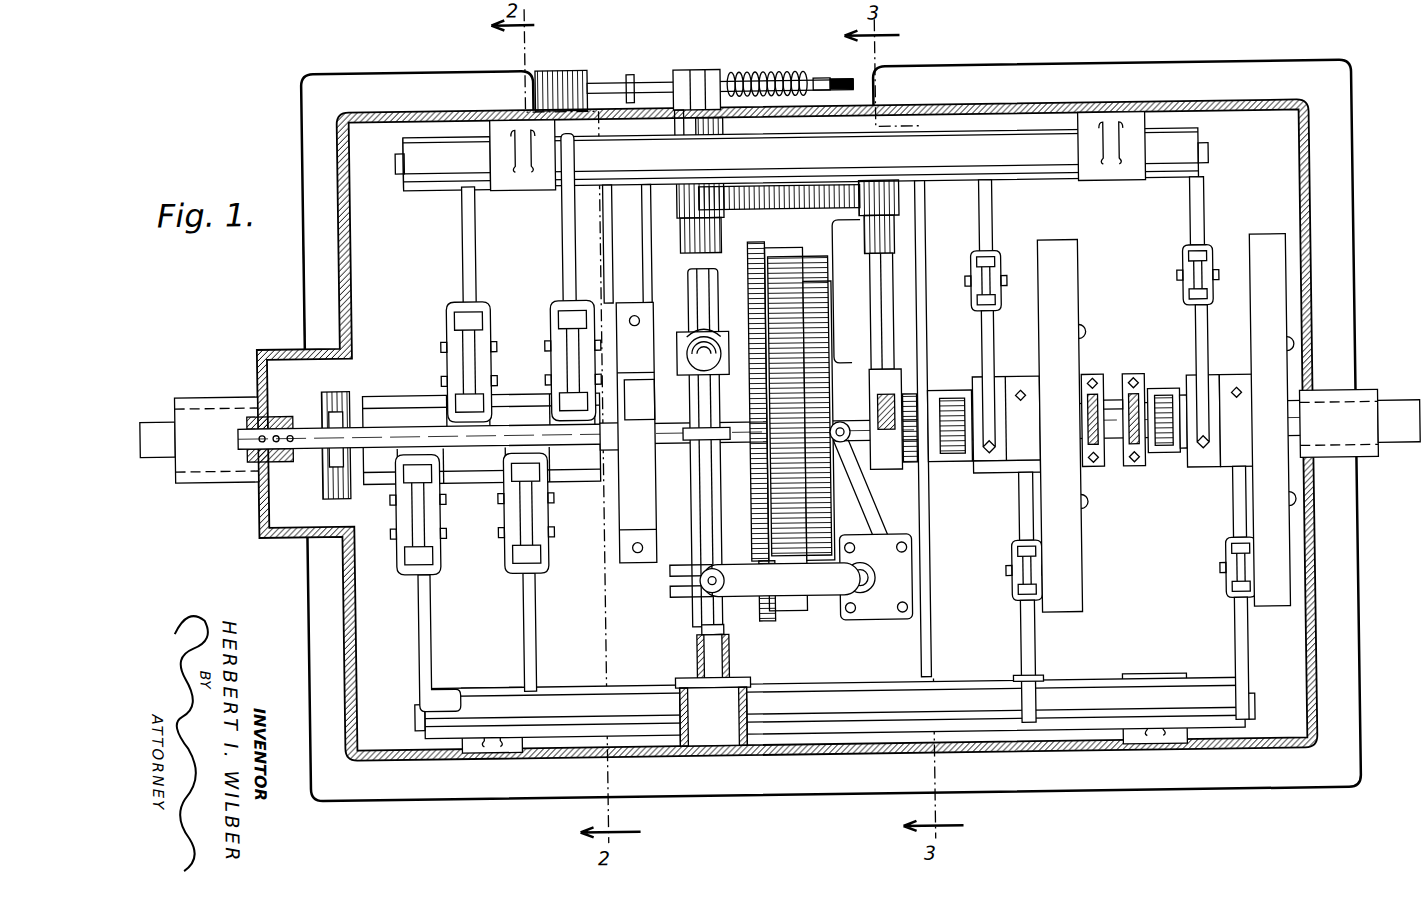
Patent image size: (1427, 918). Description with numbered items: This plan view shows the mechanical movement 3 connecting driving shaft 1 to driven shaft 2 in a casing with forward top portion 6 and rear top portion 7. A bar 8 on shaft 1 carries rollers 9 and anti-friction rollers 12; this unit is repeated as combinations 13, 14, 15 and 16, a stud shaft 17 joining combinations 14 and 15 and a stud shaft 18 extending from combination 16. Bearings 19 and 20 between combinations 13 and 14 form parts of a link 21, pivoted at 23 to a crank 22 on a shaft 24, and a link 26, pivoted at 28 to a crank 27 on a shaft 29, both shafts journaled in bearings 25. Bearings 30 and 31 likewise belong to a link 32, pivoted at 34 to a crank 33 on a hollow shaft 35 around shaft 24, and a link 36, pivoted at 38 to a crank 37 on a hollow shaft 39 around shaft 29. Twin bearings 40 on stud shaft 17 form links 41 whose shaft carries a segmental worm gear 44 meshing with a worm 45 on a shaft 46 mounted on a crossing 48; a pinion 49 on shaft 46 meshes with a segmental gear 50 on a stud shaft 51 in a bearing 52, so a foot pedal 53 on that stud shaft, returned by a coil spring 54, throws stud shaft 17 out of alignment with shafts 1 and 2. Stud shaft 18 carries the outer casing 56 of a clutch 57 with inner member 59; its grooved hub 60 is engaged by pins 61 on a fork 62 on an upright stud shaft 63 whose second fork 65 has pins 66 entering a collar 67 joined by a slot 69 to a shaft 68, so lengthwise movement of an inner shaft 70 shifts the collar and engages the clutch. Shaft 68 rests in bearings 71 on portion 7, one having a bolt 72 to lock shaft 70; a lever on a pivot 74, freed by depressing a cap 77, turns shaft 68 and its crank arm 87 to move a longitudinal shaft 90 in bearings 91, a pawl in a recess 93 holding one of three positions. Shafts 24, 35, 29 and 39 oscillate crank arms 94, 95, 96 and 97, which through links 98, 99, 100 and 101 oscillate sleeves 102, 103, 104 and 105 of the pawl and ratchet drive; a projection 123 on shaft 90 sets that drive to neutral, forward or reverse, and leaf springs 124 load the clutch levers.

The driving shaft 1 is at (1386, 410).
The driven shaft 2 is at (156, 410).
The mechanical movement 3 is at (830, 412).
The forward top portion 6 is at (1055, 92).
The rear top portion 7 is at (458, 107).
The bar 8 is at (946, 398).
The rollers 9 is at (1163, 394).
The anti-friction rollers 12 is at (1086, 334).
The first combination 13 is at (1262, 244).
The second combination 14 is at (1180, 462).
The third combination 15 is at (1050, 250).
The fourth combination 16 is at (958, 464).
The stud shaft 17 is at (1113, 403).
The stud shaft 18 is at (934, 382).
The bearing 19 is at (1223, 380).
The bearing 20 is at (1205, 474).
The link 21 is at (1232, 528).
The crank 22 is at (1231, 652).
The pivot 23 is at (1217, 578).
The shaft 24 is at (410, 706).
The bearings 25 is at (530, 187).
The link 26 is at (1196, 344).
The crank 27 is at (1192, 216).
The pivot 28 is at (1178, 274).
The shaft 29 is at (400, 153).
The bearing 30 is at (1006, 380).
The bearing 31 is at (994, 476).
The link 32 is at (1033, 524).
The crank 33 is at (1017, 640).
The pivot 34 is at (1004, 578).
The hollow shaft 35 is at (950, 684).
The link 36 is at (996, 352).
The crank 37 is at (981, 212).
The pivot 38 is at (968, 280).
The hollow shaft 39 is at (828, 150).
The twin bearings 40 is at (1100, 472).
The links 41 is at (1130, 420).
The segmental worm gear 44 is at (872, 348).
The worm 45 is at (916, 460).
The shaft 46 is at (876, 285).
The crossing 48 is at (929, 310).
The pinion 49 is at (862, 214).
The segmental gear 50 is at (820, 208).
The stud shaft 51 is at (703, 68).
The bearing 52 is at (679, 129).
The foot pedal 53 is at (835, 78).
The coil spring 54 is at (782, 72).
The clutch outer casing 56 is at (799, 429).
The clutch 57 is at (762, 620).
The clutch inner member 59 is at (756, 340).
The grooved hub 60 is at (870, 372).
The pins 61 is at (832, 437).
The fork 62 is at (862, 515).
The upright stud shaft 63 is at (862, 593).
The second fork 65 is at (830, 598).
The pins 66 is at (668, 590).
The collar 67 is at (655, 552).
The shaft 68 is at (689, 504).
The slot 69 is at (701, 626).
The shaft 70 is at (727, 658).
The bearings 71 is at (690, 677).
The bolt 72 is at (718, 718).
The pivot 74 is at (680, 350).
The cap 77 is at (690, 334).
The crank arm 87 is at (740, 432).
The longitudinal shaft 90 is at (376, 420).
The bearings 91 is at (606, 428).
The recess 93 is at (280, 428).
The crank arm 94 is at (415, 638).
The crank 95 is at (534, 630).
The crank arm 96 is at (464, 216).
The arm 97 is at (564, 254).
The link 98 is at (410, 556).
The link 99 is at (507, 560).
The link 100 is at (463, 317).
The link 101 is at (566, 320).
The sleeve 102 is at (411, 390).
The sleeve 103 is at (476, 478).
The sleeve 104 is at (521, 390).
The sleeve 105 is at (582, 478).
The projection 123 is at (338, 386).
The leaf springs 124 is at (656, 440).